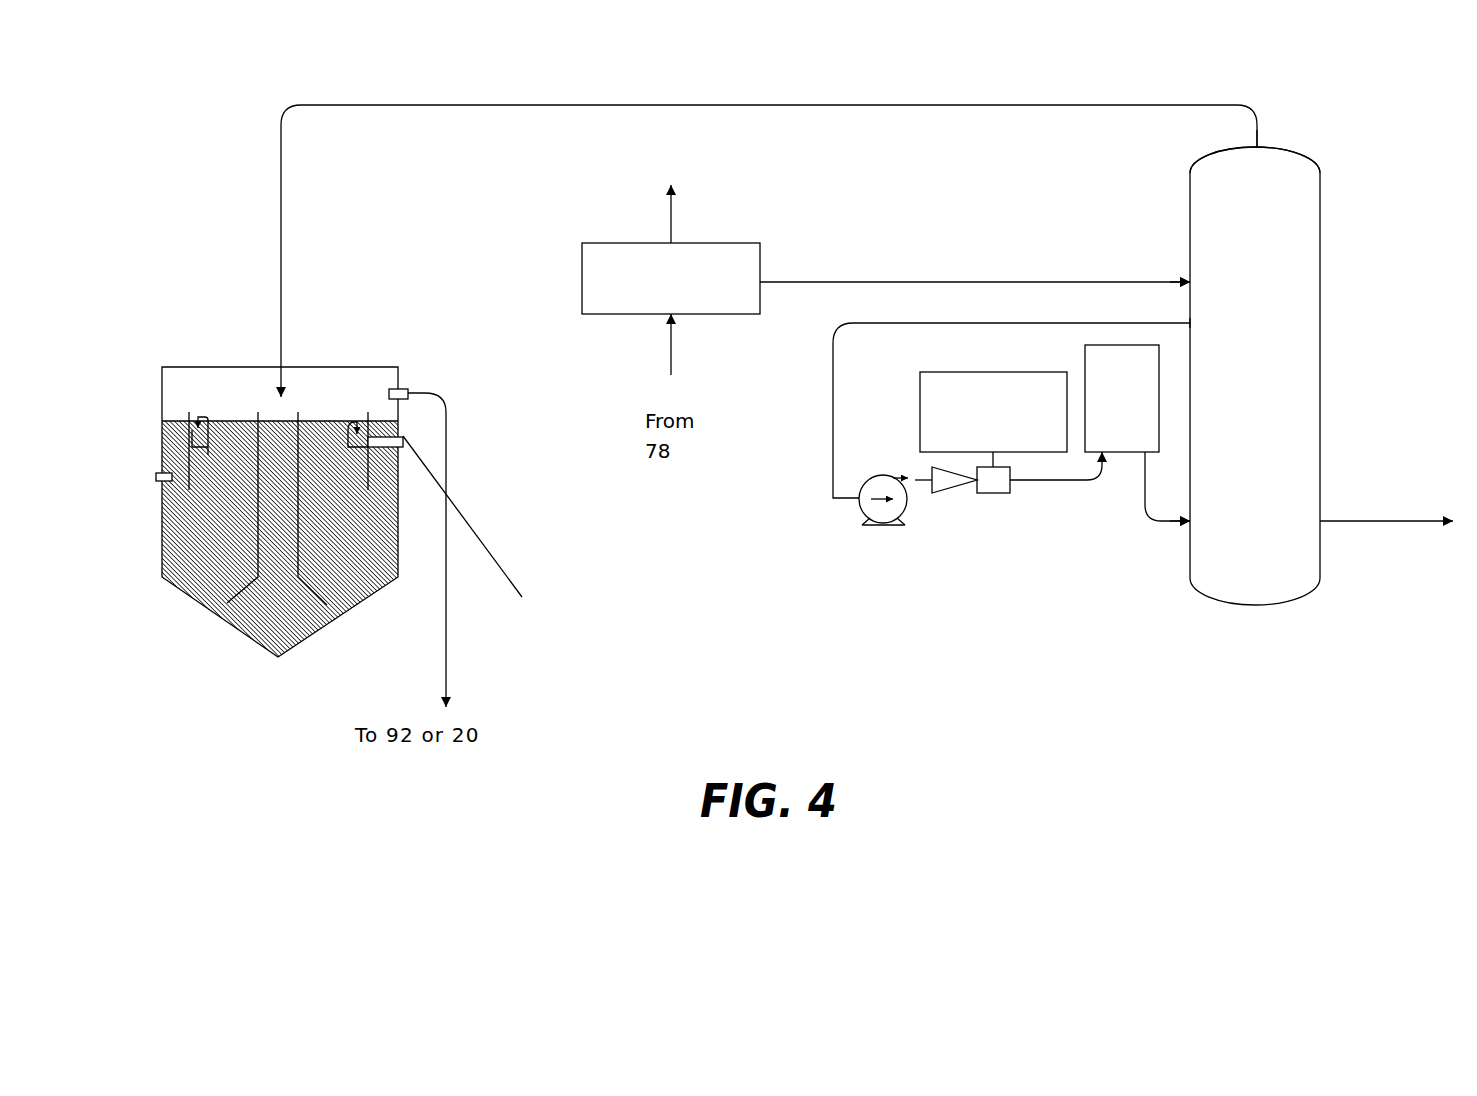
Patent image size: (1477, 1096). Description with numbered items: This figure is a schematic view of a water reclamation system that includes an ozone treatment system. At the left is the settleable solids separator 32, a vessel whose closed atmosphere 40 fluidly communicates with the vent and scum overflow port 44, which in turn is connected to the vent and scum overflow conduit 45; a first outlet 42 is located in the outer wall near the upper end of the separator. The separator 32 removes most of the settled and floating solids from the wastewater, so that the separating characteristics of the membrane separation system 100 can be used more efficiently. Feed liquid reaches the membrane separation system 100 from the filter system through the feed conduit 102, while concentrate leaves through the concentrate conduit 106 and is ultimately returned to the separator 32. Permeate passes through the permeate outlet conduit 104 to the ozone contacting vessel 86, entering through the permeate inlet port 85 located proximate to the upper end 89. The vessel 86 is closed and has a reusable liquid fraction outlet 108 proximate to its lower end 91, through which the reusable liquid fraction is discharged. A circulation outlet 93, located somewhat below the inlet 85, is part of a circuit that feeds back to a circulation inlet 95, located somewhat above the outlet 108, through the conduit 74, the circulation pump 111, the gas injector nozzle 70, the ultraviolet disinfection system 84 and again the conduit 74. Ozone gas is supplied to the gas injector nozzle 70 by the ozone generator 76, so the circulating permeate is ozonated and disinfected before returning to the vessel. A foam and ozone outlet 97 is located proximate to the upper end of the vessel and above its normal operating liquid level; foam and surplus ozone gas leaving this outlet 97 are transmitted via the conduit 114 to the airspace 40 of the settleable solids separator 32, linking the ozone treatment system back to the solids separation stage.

The settleable solids separator 32 is at (232, 625).
The closed atmosphere 40 is at (203, 383).
The first outlet 42 is at (457, 523).
The vent and scum overflow port 44 is at (395, 389).
The vent and scum overflow conduit 45 is at (448, 403).
The gas injector nozzle 70 is at (997, 482).
The conduit 74 is at (917, 323).
The ozone generator 76 is at (1017, 385).
The ultraviolet disinfection system 84 is at (1133, 355).
The permeate inlet port 85 is at (1195, 280).
The ozone contacting vessel 86 is at (1320, 320).
The upper end 89 is at (1320, 173).
The lower end 91 is at (1320, 578).
The circulation outlet 93 is at (1186, 318).
The circulation inlet 95 is at (1190, 521).
The foam and ozone outlet 97 is at (1257, 146).
The membrane separation system 100 is at (748, 242).
The feed conduit 102 is at (670, 353).
The permeate outlet conduit 104 is at (918, 282).
The concentrate conduit 106 is at (673, 222).
The reusable liquid fraction outlet 108 is at (1360, 521).
The circulation pump 111 is at (898, 523).
The conduit 114 is at (285, 187).